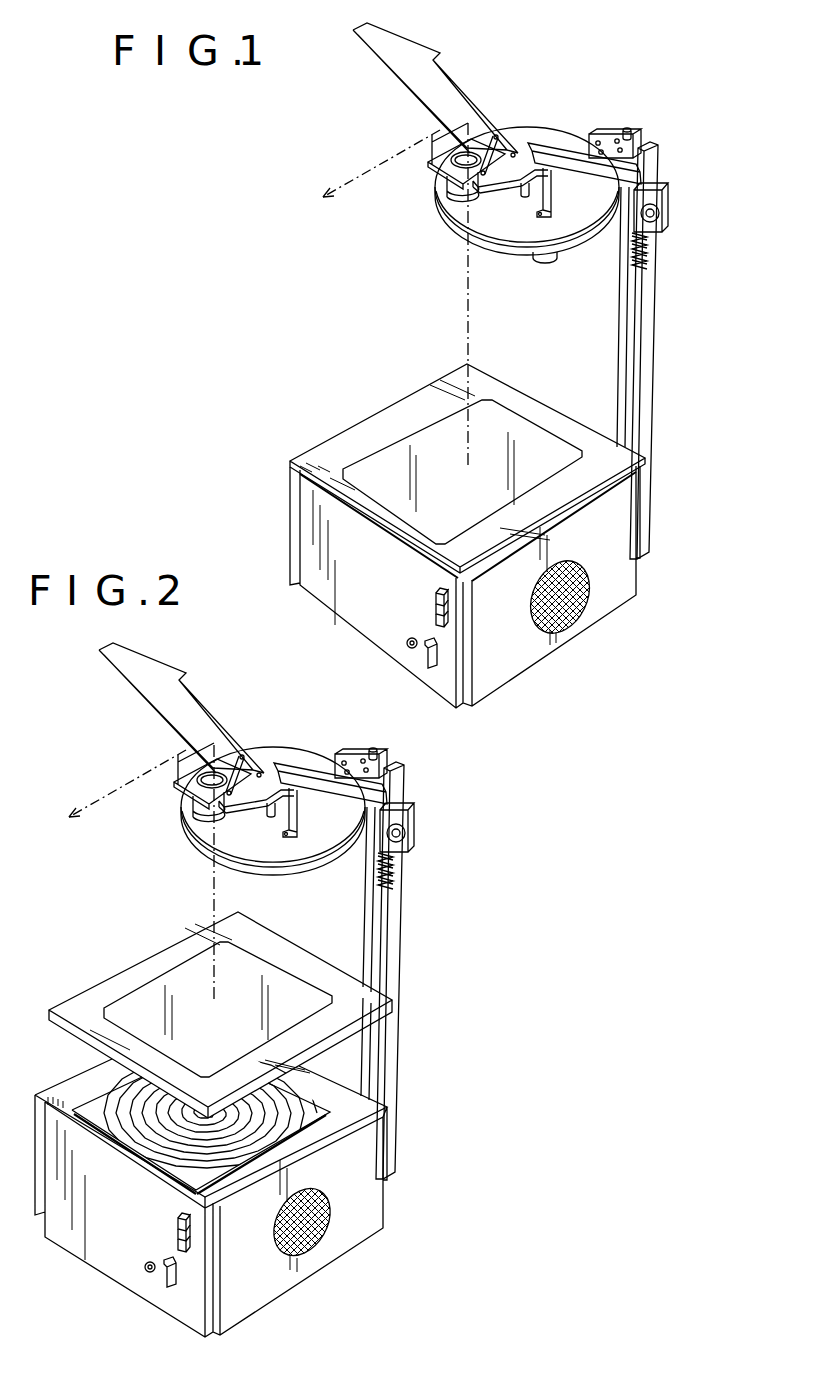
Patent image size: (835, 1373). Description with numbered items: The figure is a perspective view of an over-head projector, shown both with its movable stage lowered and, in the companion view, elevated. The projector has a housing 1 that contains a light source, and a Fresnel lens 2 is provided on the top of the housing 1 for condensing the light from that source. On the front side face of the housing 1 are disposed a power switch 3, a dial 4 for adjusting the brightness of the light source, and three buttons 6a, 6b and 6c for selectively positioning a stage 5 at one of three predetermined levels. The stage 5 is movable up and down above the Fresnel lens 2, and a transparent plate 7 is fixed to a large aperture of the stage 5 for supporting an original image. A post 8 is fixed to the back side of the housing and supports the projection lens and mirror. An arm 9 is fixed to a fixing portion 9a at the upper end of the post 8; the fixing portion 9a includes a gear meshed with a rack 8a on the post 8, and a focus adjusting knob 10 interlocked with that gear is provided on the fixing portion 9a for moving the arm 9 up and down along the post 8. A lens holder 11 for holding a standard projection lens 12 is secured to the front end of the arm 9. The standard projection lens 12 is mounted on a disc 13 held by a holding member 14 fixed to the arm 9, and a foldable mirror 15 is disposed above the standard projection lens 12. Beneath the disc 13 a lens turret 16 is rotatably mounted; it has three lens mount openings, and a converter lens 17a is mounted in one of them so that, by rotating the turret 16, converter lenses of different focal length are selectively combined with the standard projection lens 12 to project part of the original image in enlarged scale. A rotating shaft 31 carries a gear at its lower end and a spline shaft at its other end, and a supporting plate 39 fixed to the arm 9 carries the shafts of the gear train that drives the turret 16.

In FIG. 1, the housing 1 is at (620, 583).
In FIG. 2, the housing 1 is at (87, 1250).
In FIG. 2, the Fresnel lens 2 is at (128, 1108).
In FIG. 1, the power switch 3 is at (434, 648).
In FIG. 2, the power switch 3 is at (177, 1270).
In FIG. 1, the dial 4 is at (407, 643).
In FIG. 2, the dial 4 is at (147, 1273).
In FIG. 1, the stage 5 is at (343, 452).
In FIG. 2, the stage 5 is at (120, 983).
In FIG. 1, the button 6a is at (435, 593).
In FIG. 2, the button 6a is at (177, 1220).
In FIG. 1, the button 6b is at (447, 603).
In FIG. 2, the button 6b is at (192, 1232).
In FIG. 1, the button 6c is at (435, 613).
In FIG. 2, the button 6c is at (177, 1243).
In FIG. 1, the transparent plate 7 is at (436, 452).
In FIG. 2, the transparent plate 7 is at (300, 997).
In FIG. 1, the post 8 is at (652, 335).
In FIG. 2, the post 8 is at (396, 928).
In FIG. 1, the rack 8a is at (648, 255).
In FIG. 2, the rack 8a is at (394, 874).
In FIG. 1, the arm 9 is at (558, 148).
In FIG. 2, the arm 9 is at (304, 768).
In FIG. 1, the fixing portion 9a is at (660, 200).
In FIG. 2, the fixing portion 9a is at (407, 814).
In FIG. 1, the focus adjusting knob 10 is at (660, 213).
In FIG. 2, the focus adjusting knob 10 is at (405, 830).
In FIG. 1, the lens holder 11 is at (510, 180).
In FIG. 2, the lens holder 11 is at (253, 802).
In FIG. 1, the standard projection lens 12 is at (455, 192).
In FIG. 2, the standard projection lens 12 is at (202, 802).
In FIG. 1, the disc 13 is at (497, 232).
In FIG. 2, the disc 13 is at (260, 848).
In FIG. 1, the holding member 14 is at (553, 190).
In FIG. 2, the holding member 14 is at (299, 806).
In FIG. 1, the foldable mirror 15 is at (428, 90).
In FIG. 2, the foldable mirror 15 is at (173, 710).
In FIG. 1, the lens turret 16 is at (598, 233).
In FIG. 2, the lens turret 16 is at (343, 846).
In FIG. 1, the converter lens 17a is at (547, 260).
In FIG. 1, the rotating shaft 31 is at (618, 385).
In FIG. 2, the rotating shaft 31 is at (372, 1059).
In FIG. 1, the supporting plate 39 is at (608, 132).
In FIG. 2, the supporting plate 39 is at (351, 748).